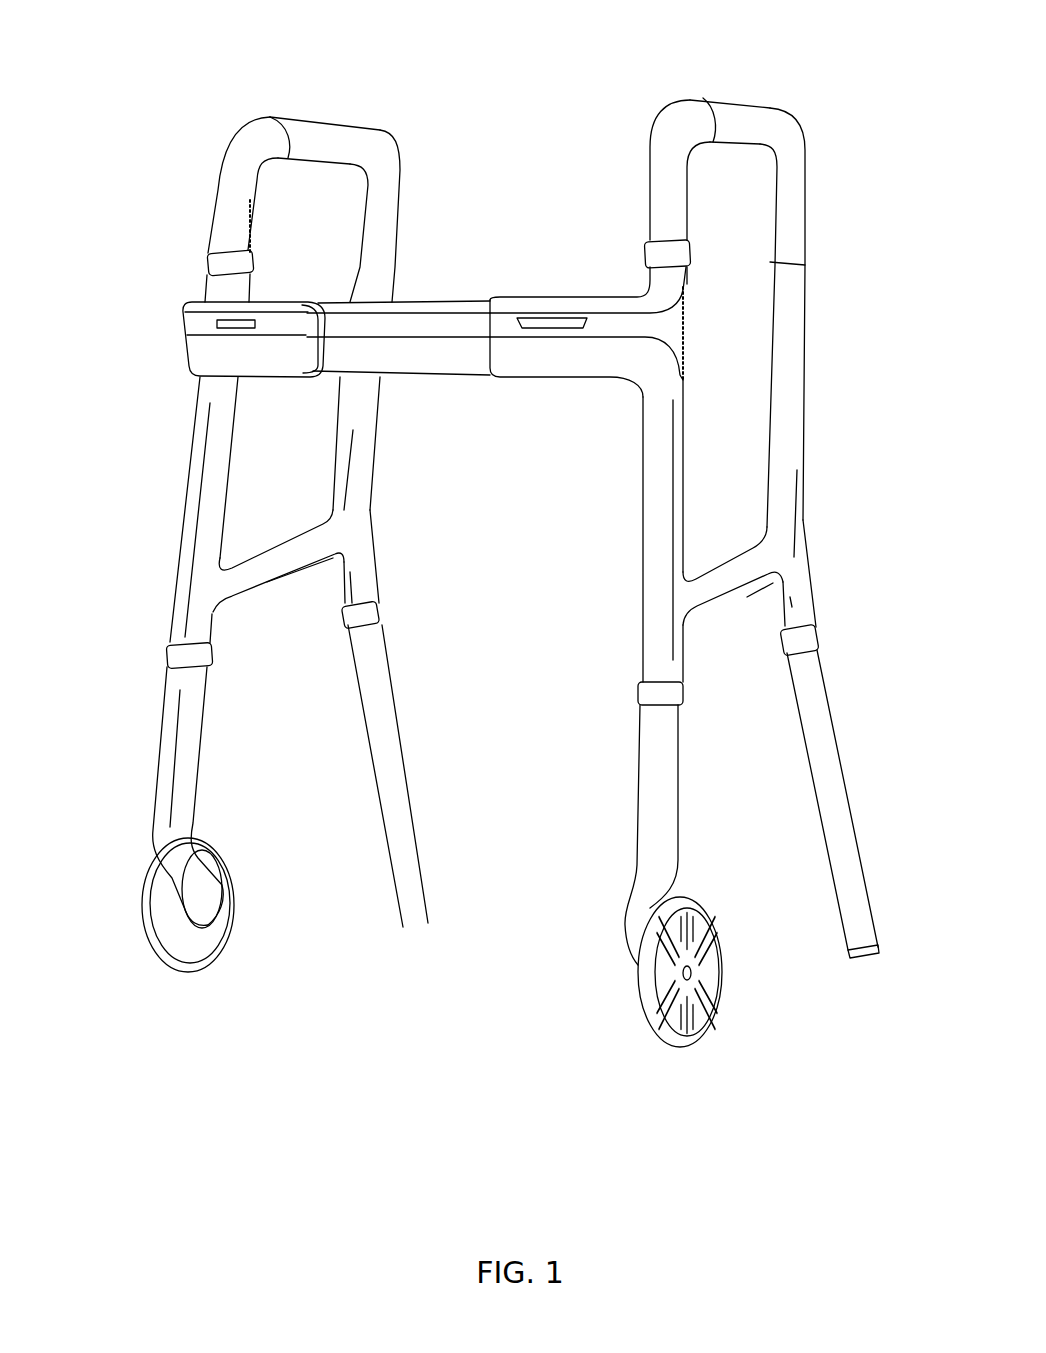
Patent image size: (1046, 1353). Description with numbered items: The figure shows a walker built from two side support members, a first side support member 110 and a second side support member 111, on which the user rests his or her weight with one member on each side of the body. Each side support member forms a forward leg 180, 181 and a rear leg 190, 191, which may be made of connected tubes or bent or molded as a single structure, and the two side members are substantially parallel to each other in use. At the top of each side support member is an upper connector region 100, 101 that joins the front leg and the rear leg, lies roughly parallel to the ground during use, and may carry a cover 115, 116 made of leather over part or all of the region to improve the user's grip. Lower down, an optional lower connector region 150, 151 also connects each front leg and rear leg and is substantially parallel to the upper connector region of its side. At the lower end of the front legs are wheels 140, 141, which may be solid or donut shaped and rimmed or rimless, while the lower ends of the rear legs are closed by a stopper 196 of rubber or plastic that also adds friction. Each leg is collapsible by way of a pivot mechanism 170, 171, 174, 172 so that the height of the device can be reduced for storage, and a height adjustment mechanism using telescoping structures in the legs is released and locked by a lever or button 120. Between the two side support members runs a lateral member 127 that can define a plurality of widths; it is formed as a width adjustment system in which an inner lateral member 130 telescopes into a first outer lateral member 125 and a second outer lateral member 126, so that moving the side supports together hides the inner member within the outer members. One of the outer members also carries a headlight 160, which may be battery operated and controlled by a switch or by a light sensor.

The upper connector region 100 is at (318, 120).
The upper connector region 101 is at (752, 102).
The first side support member 110 is at (235, 173).
The second side support member 111 is at (652, 170).
The cover 115 is at (400, 213).
The cover 116 is at (795, 200).
The lever or button 120 is at (212, 262).
The first outer lateral member 125 is at (268, 301).
The second outer lateral member 126 is at (585, 297).
The lateral member 127 is at (440, 300).
The inner lateral member 130 is at (327, 352).
The wheel 140 is at (145, 880).
The wheel 141 is at (655, 1018).
The lower connector region 150 is at (265, 542).
The lower connector region 151 is at (722, 560).
The headlight 160 is at (587, 323).
The pivot mechanism 170 is at (165, 655).
The pivot mechanism 171 is at (391, 584).
The pivot mechanism 172 is at (815, 640).
The pivot mechanism 174 is at (636, 692).
The forward leg 180 is at (200, 745).
The forward leg 181 is at (657, 802).
The rear leg 190 is at (395, 802).
The rear leg 191 is at (832, 778).
The stopper 196 is at (870, 960).